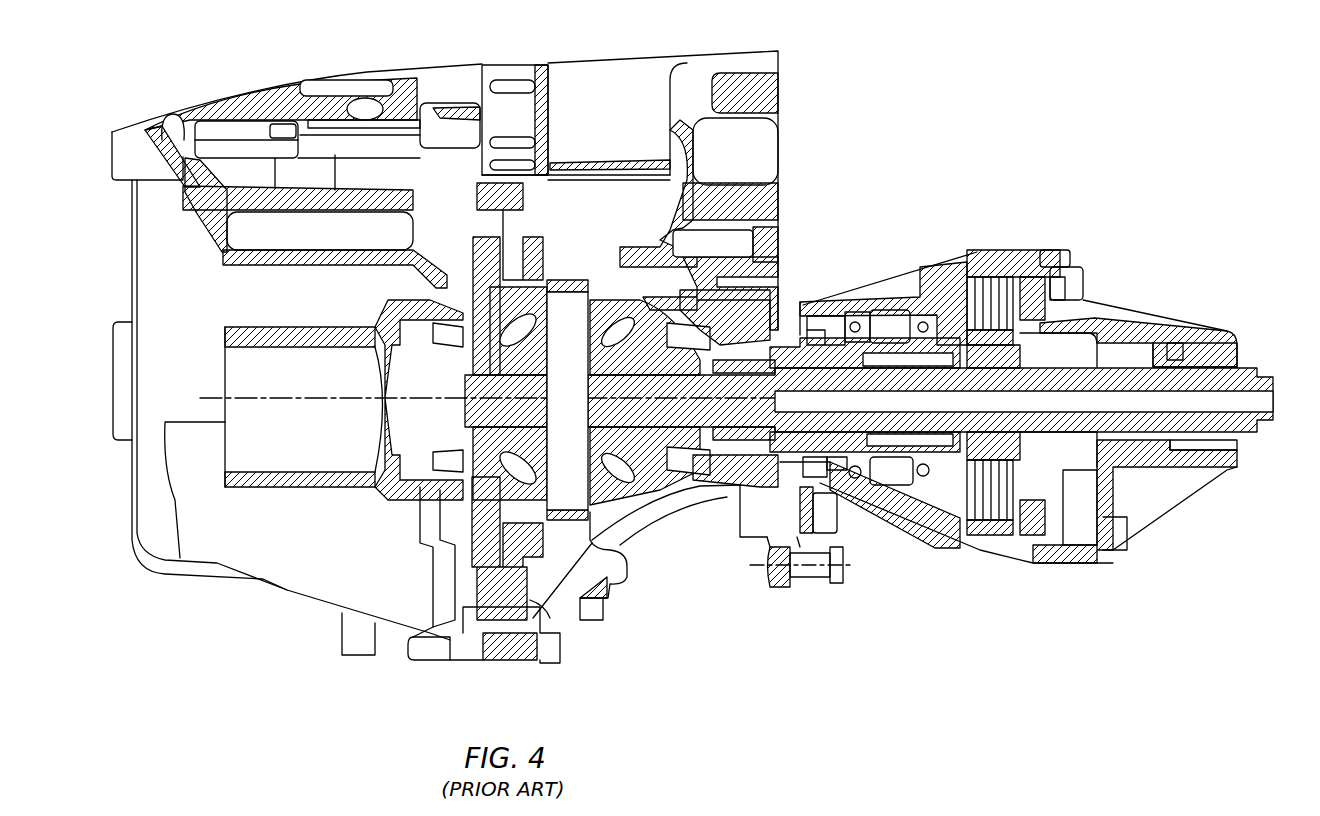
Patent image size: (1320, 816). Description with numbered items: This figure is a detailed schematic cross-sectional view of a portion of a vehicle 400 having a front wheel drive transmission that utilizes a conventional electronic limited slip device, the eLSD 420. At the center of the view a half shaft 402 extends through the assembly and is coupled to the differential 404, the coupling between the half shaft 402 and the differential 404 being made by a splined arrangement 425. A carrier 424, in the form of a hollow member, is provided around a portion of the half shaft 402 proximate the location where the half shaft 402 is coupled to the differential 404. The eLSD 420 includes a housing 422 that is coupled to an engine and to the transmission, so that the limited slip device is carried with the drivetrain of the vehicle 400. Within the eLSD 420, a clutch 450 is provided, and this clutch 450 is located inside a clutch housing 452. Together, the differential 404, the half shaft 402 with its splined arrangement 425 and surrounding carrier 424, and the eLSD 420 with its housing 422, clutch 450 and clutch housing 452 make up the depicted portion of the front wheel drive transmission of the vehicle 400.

The vehicle 400 is at (445, 355).
The half shaft 402 is at (1133, 447).
The differential 404 is at (597, 560).
The eLSD 420 is at (1008, 576).
The housing 422 is at (873, 290).
The carrier 424 is at (787, 328).
The splined arrangement 425 is at (767, 593).
The clutch 450 is at (970, 268).
The clutch housing 452 is at (985, 550).